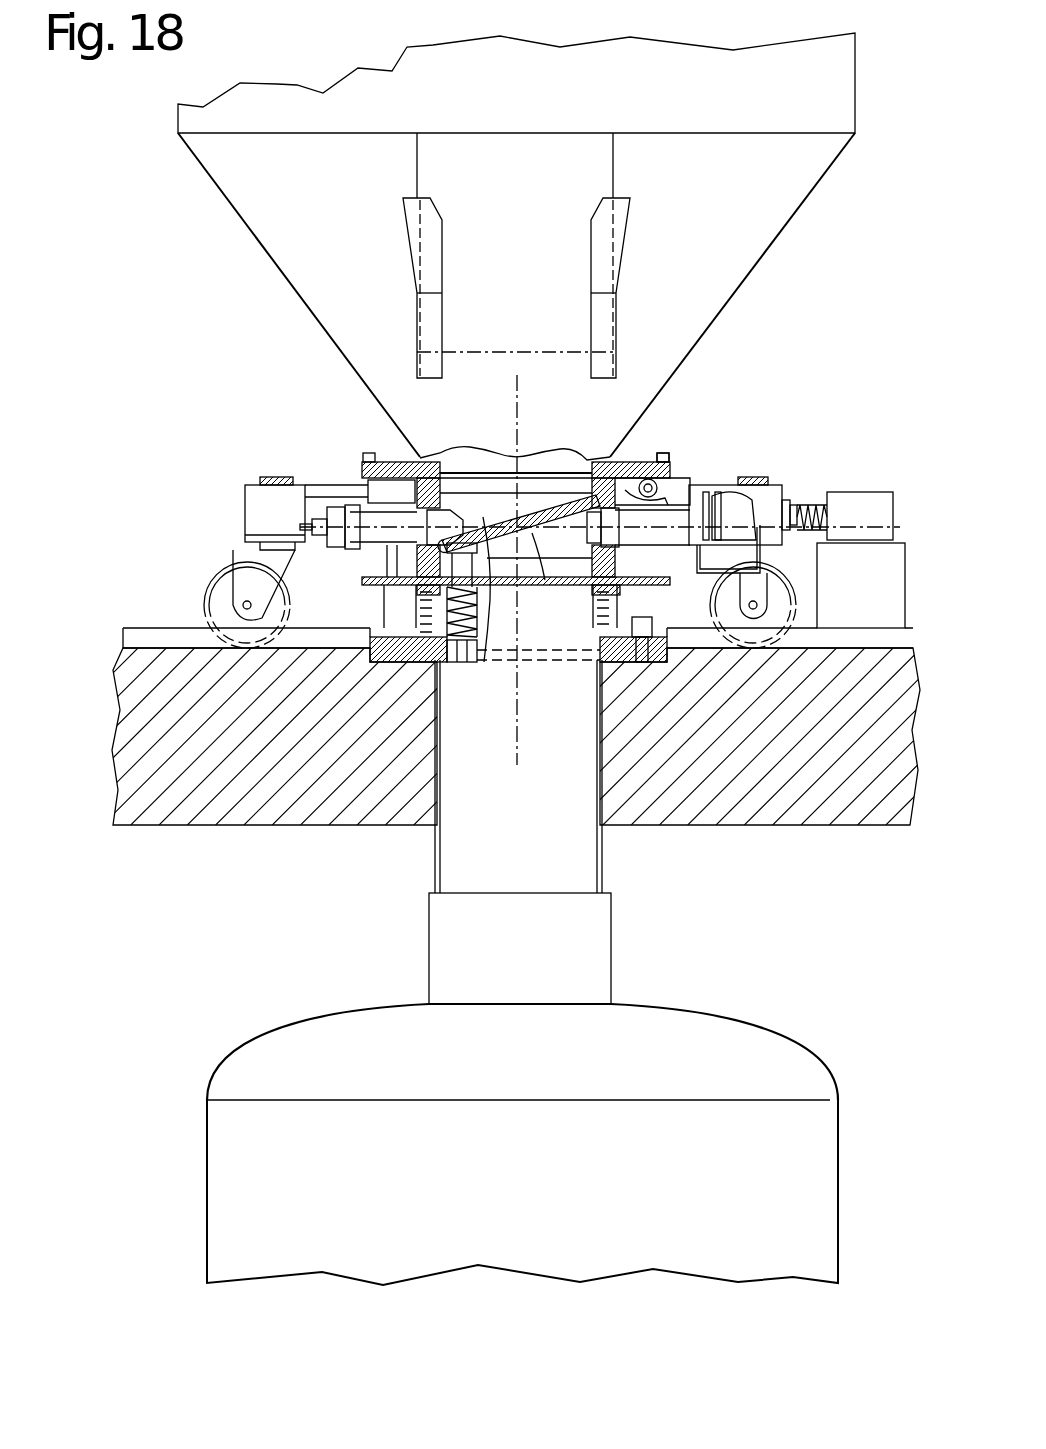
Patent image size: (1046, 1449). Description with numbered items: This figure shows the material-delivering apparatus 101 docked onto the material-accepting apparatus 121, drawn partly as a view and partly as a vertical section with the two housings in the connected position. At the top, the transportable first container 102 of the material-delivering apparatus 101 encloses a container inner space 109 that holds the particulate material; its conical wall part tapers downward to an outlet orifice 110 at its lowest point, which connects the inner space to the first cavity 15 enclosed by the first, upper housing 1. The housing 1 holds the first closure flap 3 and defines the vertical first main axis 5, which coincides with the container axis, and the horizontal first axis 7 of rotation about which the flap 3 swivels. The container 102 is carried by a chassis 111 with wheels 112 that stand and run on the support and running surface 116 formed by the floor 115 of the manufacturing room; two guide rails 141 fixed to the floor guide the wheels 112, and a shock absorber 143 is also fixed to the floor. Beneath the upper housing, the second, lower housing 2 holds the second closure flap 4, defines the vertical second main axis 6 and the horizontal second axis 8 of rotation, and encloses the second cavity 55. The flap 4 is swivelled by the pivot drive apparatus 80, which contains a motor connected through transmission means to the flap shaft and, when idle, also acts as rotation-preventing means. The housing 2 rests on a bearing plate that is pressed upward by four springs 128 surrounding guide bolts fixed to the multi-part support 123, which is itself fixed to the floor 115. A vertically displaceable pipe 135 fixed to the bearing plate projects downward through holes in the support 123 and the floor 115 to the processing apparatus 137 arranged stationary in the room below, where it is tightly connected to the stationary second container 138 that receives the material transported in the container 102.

The material-delivering apparatus 101 is at (172, 120).
The first container 102 is at (217, 196).
The first cavity 15 is at (473, 492).
The first main axis 5 is at (520, 400).
The container inner space 109 is at (565, 457).
The outlet orifice 110 is at (662, 476).
The first housing 1 is at (368, 493).
The first closure flap 3 is at (487, 500).
The second axis of rotation 8 is at (683, 488).
The pivot drive apparatus 80 is at (757, 495).
The shock absorber 143 is at (848, 500).
The chassis 111 is at (246, 497).
The wheels 112 is at (225, 587).
The first axis of rotation 7 is at (355, 562).
The second housing 2 is at (622, 558).
The guide rails 141 is at (165, 627).
The support and running surface 116 is at (150, 648).
The floor 115 is at (140, 694).
The multi-part support 123 is at (368, 663).
The second cavity 55 is at (507, 640).
The second closure flap 4 is at (548, 640).
The second main axis 6 is at (520, 745).
The springs 128 is at (482, 640).
The vertically displaceable pipe 135 is at (443, 854).
The material-accepting apparatus 121 is at (266, 1021).
The processing apparatus 137 is at (237, 1047).
The second container 138 is at (210, 1078).